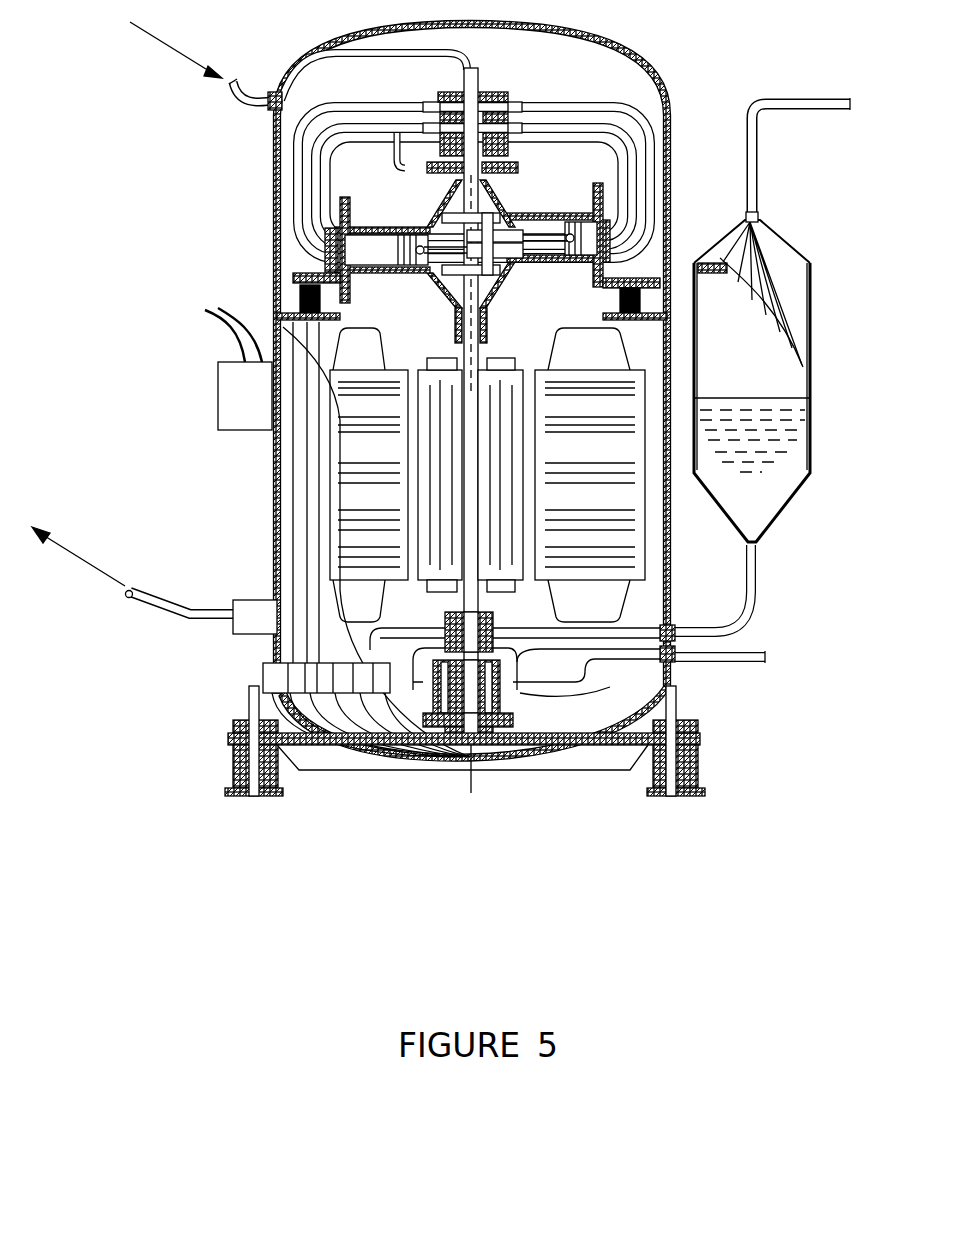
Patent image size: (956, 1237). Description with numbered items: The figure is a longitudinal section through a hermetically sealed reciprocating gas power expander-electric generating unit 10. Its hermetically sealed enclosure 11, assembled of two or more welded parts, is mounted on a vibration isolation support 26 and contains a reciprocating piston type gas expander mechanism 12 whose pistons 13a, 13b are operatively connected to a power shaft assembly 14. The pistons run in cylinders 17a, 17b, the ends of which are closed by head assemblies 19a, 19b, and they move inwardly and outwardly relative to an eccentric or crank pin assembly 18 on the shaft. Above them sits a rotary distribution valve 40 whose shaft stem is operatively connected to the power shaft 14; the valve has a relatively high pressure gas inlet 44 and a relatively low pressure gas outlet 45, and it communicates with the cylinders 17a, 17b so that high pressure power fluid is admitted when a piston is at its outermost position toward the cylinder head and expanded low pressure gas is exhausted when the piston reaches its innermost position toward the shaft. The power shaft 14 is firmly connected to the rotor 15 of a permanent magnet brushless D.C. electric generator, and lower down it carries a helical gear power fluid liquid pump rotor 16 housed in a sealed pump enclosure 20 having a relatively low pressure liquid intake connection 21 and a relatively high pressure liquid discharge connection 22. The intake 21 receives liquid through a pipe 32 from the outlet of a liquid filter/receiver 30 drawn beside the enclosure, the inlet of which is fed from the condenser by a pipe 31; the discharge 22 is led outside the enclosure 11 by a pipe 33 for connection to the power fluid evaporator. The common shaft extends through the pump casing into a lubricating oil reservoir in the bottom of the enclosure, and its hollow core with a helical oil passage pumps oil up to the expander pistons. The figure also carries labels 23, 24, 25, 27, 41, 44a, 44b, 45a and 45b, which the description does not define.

The gas power expander-electric generating unit 10 is at (278, 827).
The hermetically sealed enclosure 11 is at (272, 483).
The reciprocating piston type gas expander mechanism 12 is at (448, 300).
The piston 13a is at (420, 236).
The piston 13b is at (577, 220).
The power shaft assembly 14 is at (477, 345).
The rotor 15 is at (507, 372).
The power fluid liquid pump rotor 16 is at (445, 630).
The cylinder 17a is at (366, 274).
The cylinder 17b is at (560, 263).
The eccentric or crank pin assembly 18 is at (490, 217).
The head assembly 19a is at (283, 268).
The head assembly 19b is at (640, 273).
The sealed enclosure 20 is at (523, 670).
The relatively low pressure liquid intake connection 21 is at (430, 690).
The relatively high pressure liquid discharge connection 22 is at (583, 697).
The bottom bearing plate 23 is at (502, 738).
The discharge tube 24 is at (207, 607).
The suction inlet tube 25 is at (246, 90).
The vibration isolation support 26 is at (367, 772).
The terminal box 27 is at (217, 408).
The liquid filter/receiver 30 is at (810, 415).
The pipe 31 is at (813, 97).
The pipe 32 is at (695, 627).
The pipe 33 is at (743, 653).
The rotary distribution valve 40 is at (488, 93).
The valve plate 41 is at (510, 150).
The relatively high pressure gas inlet 44 is at (463, 75).
The first discharge tube stub 44a is at (517, 100).
The second discharge tube stub 44b is at (417, 102).
The relatively low pressure gas outlet 45 is at (410, 168).
The first muffler loop 45a is at (547, 138).
The second muffler loop 45b is at (395, 138).